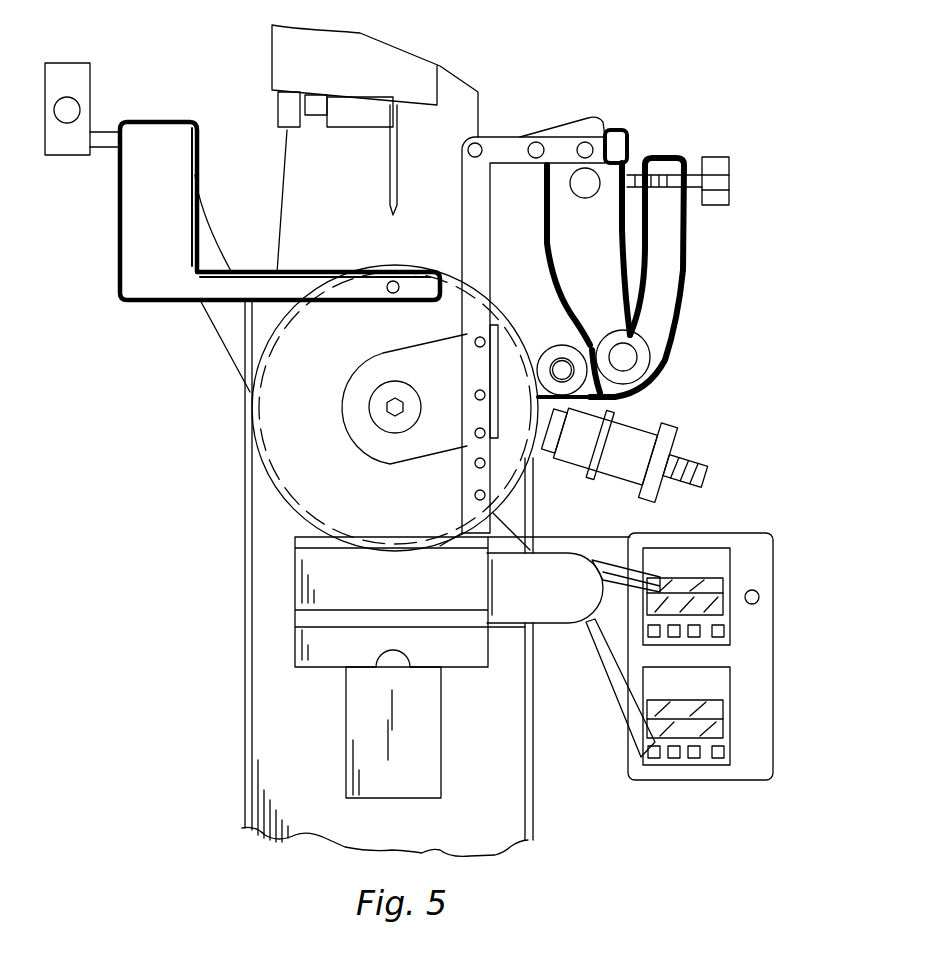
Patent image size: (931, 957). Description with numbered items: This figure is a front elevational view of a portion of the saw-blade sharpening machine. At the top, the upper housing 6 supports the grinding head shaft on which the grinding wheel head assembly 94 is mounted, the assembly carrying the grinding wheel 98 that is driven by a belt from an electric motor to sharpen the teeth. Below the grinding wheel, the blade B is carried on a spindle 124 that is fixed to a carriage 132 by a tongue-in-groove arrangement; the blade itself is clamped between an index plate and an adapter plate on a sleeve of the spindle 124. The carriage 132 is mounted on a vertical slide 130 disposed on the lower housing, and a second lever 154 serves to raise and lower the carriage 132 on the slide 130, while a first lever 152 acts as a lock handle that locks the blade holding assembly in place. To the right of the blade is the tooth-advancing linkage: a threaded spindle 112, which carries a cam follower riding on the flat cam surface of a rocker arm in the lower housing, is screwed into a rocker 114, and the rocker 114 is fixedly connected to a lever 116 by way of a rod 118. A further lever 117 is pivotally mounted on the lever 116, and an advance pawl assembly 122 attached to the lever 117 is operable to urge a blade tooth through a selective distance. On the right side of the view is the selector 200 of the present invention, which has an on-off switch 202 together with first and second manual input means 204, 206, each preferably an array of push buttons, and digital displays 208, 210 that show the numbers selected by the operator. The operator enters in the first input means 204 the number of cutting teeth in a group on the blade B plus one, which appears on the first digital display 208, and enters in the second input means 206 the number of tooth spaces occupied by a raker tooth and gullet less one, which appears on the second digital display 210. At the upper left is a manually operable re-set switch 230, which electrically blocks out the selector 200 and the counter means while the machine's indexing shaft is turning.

The re-set switch 230 is at (76, 63).
The grinding wheel head assembly 94 is at (272, 54).
The grinding wheel 98 is at (397, 175).
The upper housing 6 is at (282, 182).
The advance pawl assembly 122 is at (521, 117).
The lever 117 is at (548, 245).
The lever 116 is at (683, 255).
The rod 118 is at (565, 358).
The spindle 124 is at (340, 396).
The blade B is at (270, 425).
The threaded spindle 112 is at (683, 470).
The rocker 114 is at (542, 462).
The second lever 154 is at (633, 575).
The first lever 152 is at (615, 722).
The carriage 132 is at (300, 578).
The vertical slide 130 is at (355, 723).
The selector 200 is at (742, 780).
The first digital display 208 is at (723, 585).
The on-off switch 202 is at (760, 597).
The first manual input means 204 is at (720, 635).
The second digital display 210 is at (718, 712).
The second manual input means 206 is at (720, 755).